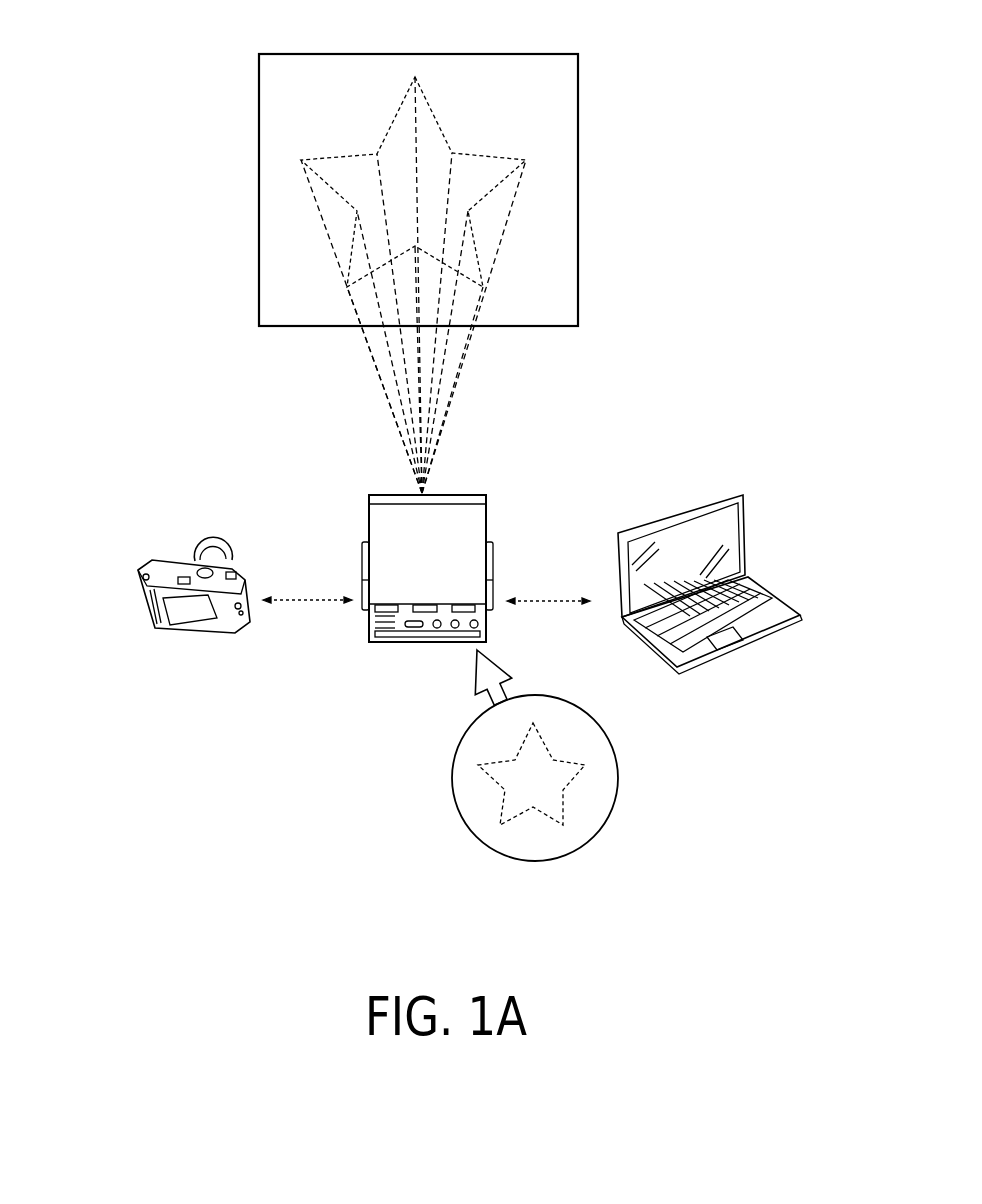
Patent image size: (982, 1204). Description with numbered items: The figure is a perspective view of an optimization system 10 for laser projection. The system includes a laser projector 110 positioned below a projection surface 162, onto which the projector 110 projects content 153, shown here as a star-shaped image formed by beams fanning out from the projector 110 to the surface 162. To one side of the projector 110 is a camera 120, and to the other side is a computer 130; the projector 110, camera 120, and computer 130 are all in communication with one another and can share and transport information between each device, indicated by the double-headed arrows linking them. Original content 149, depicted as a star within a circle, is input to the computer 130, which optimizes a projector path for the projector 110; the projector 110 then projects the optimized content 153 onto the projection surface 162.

The optimization system 10 is at (643, 331).
The laser projector 110 is at (465, 537).
The camera 120 is at (158, 568).
The computer 130 is at (777, 608).
The original content 149 is at (535, 832).
The content 153 is at (437, 117).
The projection surface 162 is at (522, 100).